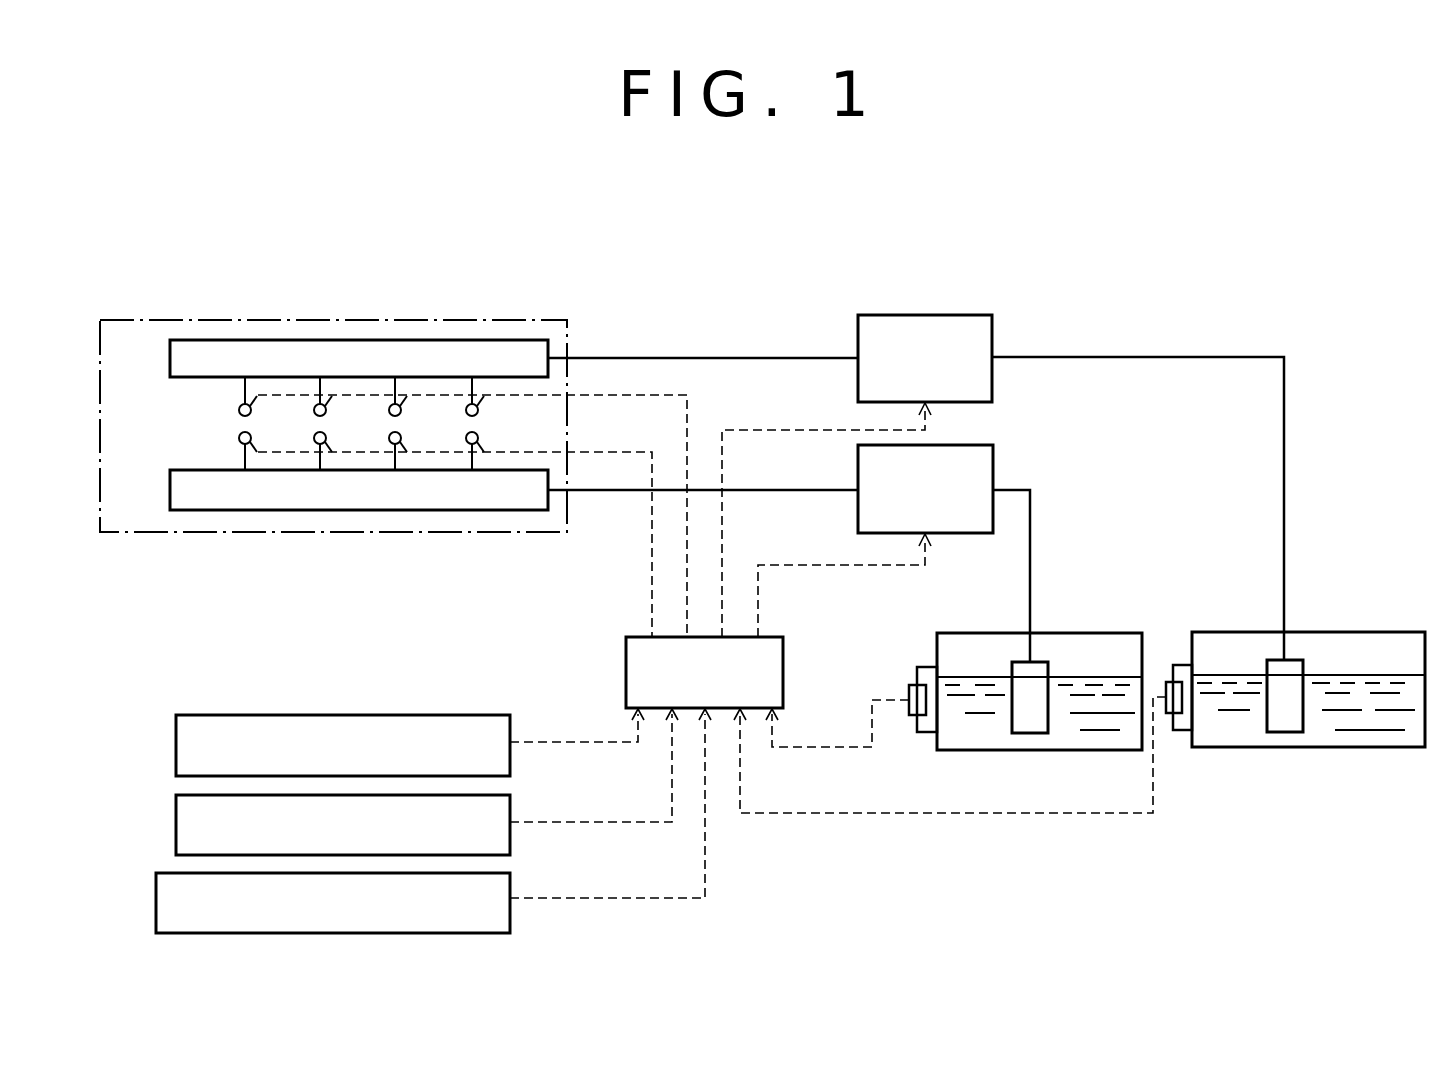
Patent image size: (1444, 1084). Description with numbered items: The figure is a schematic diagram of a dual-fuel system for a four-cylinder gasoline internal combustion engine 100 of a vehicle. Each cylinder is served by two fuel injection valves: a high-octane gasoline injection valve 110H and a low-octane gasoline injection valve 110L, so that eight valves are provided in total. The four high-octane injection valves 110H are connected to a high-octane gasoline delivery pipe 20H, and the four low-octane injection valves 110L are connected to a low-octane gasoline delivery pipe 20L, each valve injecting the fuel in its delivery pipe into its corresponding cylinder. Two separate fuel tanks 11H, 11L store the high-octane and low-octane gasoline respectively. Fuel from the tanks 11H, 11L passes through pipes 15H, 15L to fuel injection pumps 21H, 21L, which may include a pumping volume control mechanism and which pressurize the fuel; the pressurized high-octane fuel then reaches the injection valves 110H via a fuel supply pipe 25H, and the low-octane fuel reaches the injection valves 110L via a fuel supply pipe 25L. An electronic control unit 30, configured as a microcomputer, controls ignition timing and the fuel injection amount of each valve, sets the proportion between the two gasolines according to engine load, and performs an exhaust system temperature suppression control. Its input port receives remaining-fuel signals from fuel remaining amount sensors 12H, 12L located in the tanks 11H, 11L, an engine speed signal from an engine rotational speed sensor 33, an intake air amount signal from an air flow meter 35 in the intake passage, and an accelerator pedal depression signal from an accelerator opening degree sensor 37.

The internal combustion engine 100 is at (455, 320).
The high-octane gasoline delivery pipe 20H is at (233, 352).
The low-octane gasoline delivery pipe 20L is at (225, 495).
The fuel injection valve 110H is at (240, 411).
The fuel injection valve 110L is at (240, 440).
The fuel supply pipe 25H is at (722, 357).
The fuel supply pipe 25L is at (798, 490).
The fuel injection pump 21H is at (857, 476).
The fuel injection pump 21L is at (875, 541).
The pipe 15H is at (1133, 357).
The pipe 15L is at (1036, 512).
The fuel tank 11H is at (1352, 632).
The fuel tank 11L is at (1080, 632).
The fuel remaining amount sensor 12H is at (1167, 712).
The fuel remaining amount sensor 12L is at (910, 687).
The electronic control unit 30 is at (626, 672).
The engine rotational speed sensor 33 is at (176, 740).
The air flow meter 35 is at (176, 817).
The accelerator opening degree sensor 37 is at (156, 896).